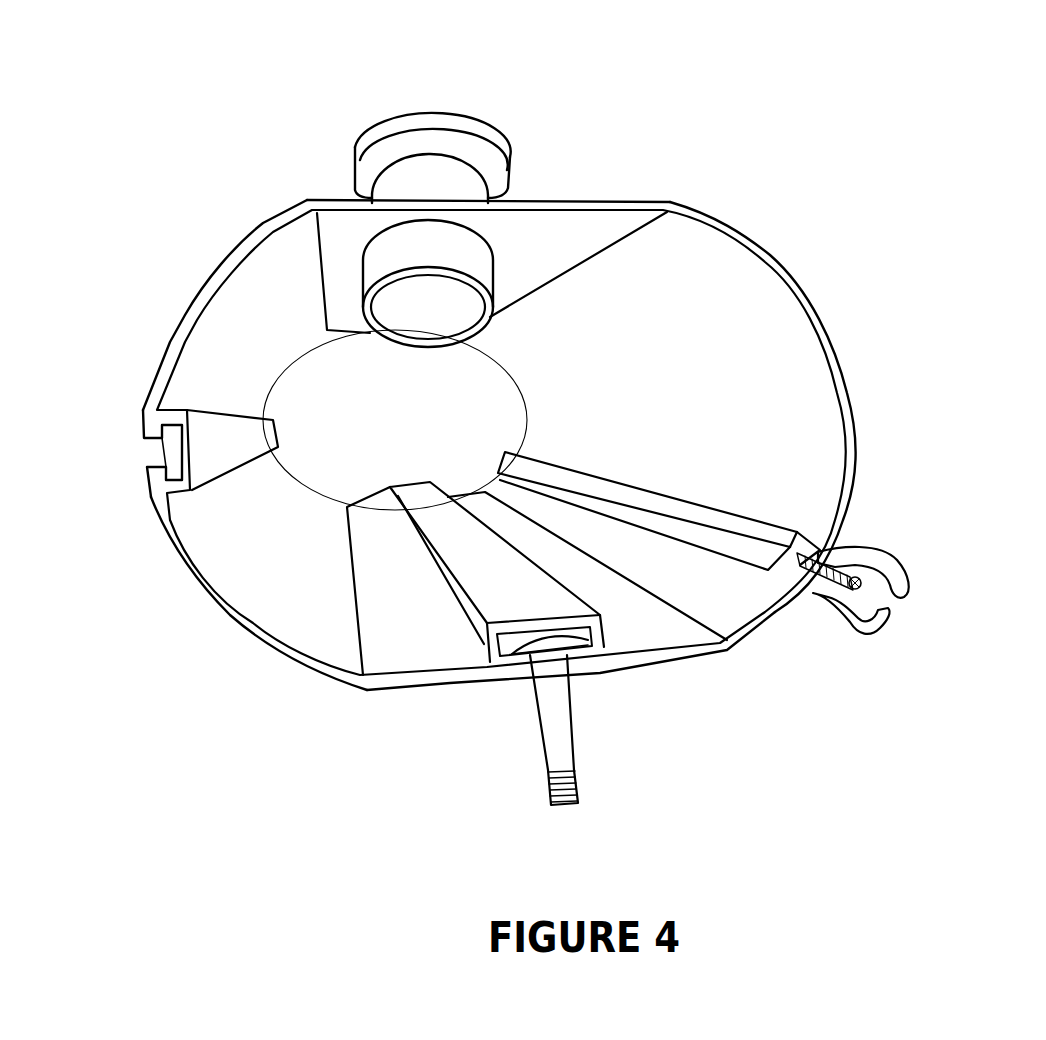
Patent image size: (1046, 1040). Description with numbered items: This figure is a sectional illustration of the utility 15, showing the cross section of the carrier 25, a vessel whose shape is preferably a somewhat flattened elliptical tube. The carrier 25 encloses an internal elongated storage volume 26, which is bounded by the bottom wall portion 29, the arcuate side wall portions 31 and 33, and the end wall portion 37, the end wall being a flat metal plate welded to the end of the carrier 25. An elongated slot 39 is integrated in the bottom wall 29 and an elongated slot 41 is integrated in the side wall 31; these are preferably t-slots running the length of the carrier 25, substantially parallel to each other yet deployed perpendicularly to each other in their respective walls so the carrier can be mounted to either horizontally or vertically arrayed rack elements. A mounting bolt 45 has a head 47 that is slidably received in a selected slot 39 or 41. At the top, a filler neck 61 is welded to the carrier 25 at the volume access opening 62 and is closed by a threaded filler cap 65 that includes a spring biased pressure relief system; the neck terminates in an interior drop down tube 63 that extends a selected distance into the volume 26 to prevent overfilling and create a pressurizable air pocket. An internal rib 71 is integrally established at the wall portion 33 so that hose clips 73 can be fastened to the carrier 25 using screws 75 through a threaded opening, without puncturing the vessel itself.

The utility 15 is at (222, 80).
The carrier 25 is at (797, 290).
The internal elongated storage volume 26 is at (688, 307).
The bottom wall portion 29 is at (397, 685).
The arcuate side wall portion 31 is at (223, 610).
The arcuate side wall portion 33 is at (820, 323).
The end wall portion 37 is at (427, 417).
The elongated slot 39 is at (587, 638).
The elongated slot 41 is at (165, 451).
The mounting bolt 45 is at (558, 733).
The head 47 is at (535, 650).
The filler neck 61 is at (460, 182).
The volume access opening 62 is at (460, 255).
The interior drop down tube 63 is at (470, 230).
The threaded filler cap 65 is at (413, 127).
The internal rib 71 is at (720, 520).
The hose clip 73 is at (867, 548).
The screw 75 is at (858, 588).